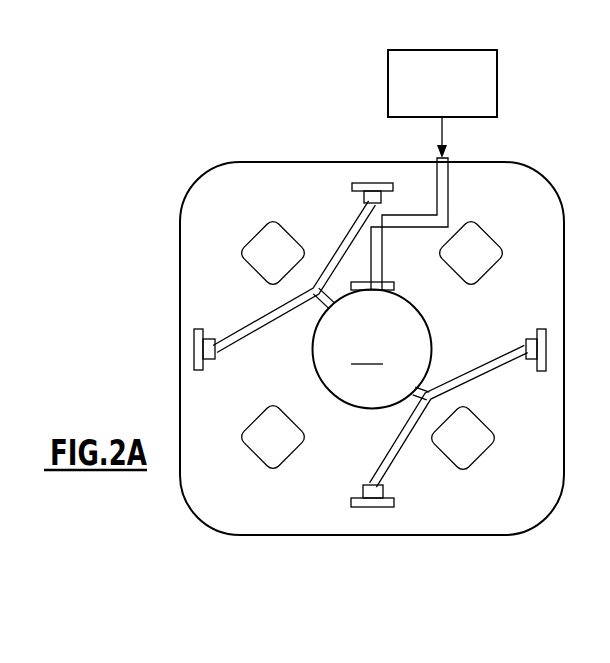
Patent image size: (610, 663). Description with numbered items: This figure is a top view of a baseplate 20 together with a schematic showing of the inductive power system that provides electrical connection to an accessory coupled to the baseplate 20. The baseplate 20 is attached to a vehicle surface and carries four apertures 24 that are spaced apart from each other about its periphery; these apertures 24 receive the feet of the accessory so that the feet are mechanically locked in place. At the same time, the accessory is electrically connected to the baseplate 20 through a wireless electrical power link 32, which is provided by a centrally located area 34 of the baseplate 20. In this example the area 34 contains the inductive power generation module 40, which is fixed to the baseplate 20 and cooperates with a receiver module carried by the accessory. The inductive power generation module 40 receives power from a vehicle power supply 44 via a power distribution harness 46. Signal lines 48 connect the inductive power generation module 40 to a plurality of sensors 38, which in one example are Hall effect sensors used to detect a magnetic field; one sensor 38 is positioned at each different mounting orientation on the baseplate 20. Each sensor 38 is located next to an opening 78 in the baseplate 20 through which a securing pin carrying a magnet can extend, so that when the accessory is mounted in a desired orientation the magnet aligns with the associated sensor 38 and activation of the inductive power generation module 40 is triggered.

The baseplate 20 is at (263, 182).
The apertures 24 is at (258, 260).
The wireless electrical power link 32 is at (278, 372).
The area 34 is at (352, 418).
The sensors 38 is at (347, 202).
The inductive power generation module 40 is at (372, 345).
The vehicle power supply 44 is at (497, 88).
The power distribution harness 46 is at (460, 193).
The signal lines 48 is at (338, 248).
The opening 78 is at (367, 183).